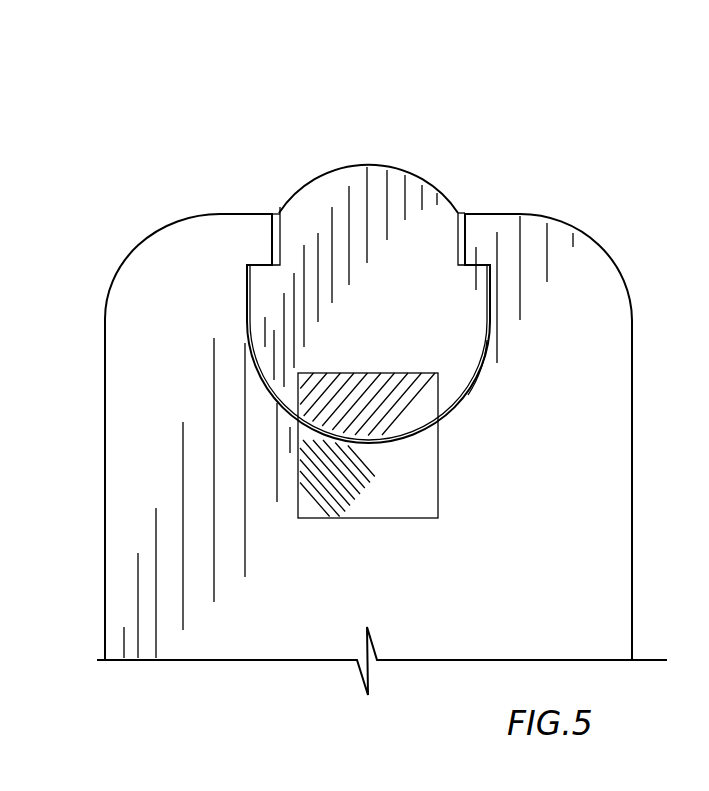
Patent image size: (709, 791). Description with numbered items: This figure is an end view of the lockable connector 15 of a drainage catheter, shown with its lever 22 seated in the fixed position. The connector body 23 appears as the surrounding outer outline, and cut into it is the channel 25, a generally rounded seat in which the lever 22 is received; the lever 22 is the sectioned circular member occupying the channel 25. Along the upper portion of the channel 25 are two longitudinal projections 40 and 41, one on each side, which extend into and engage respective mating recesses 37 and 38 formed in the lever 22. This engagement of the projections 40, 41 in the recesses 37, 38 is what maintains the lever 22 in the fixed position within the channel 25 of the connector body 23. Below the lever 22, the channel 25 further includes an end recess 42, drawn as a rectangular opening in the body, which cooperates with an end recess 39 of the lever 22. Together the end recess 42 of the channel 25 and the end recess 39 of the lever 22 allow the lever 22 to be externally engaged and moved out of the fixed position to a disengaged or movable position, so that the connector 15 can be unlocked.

The lockable connector 15 is at (368, 164).
The lever 22 is at (265, 288).
The connector body 23 is at (632, 415).
The channel 25 is at (467, 385).
The longitudinal recess 37 is at (272, 215).
The longitudinal recess 38 is at (459, 214).
The end recess 39 is at (420, 393).
The longitudinal projection 40 is at (272, 242).
The longitudinal projection 41 is at (467, 233).
The end recess 42 is at (311, 503).